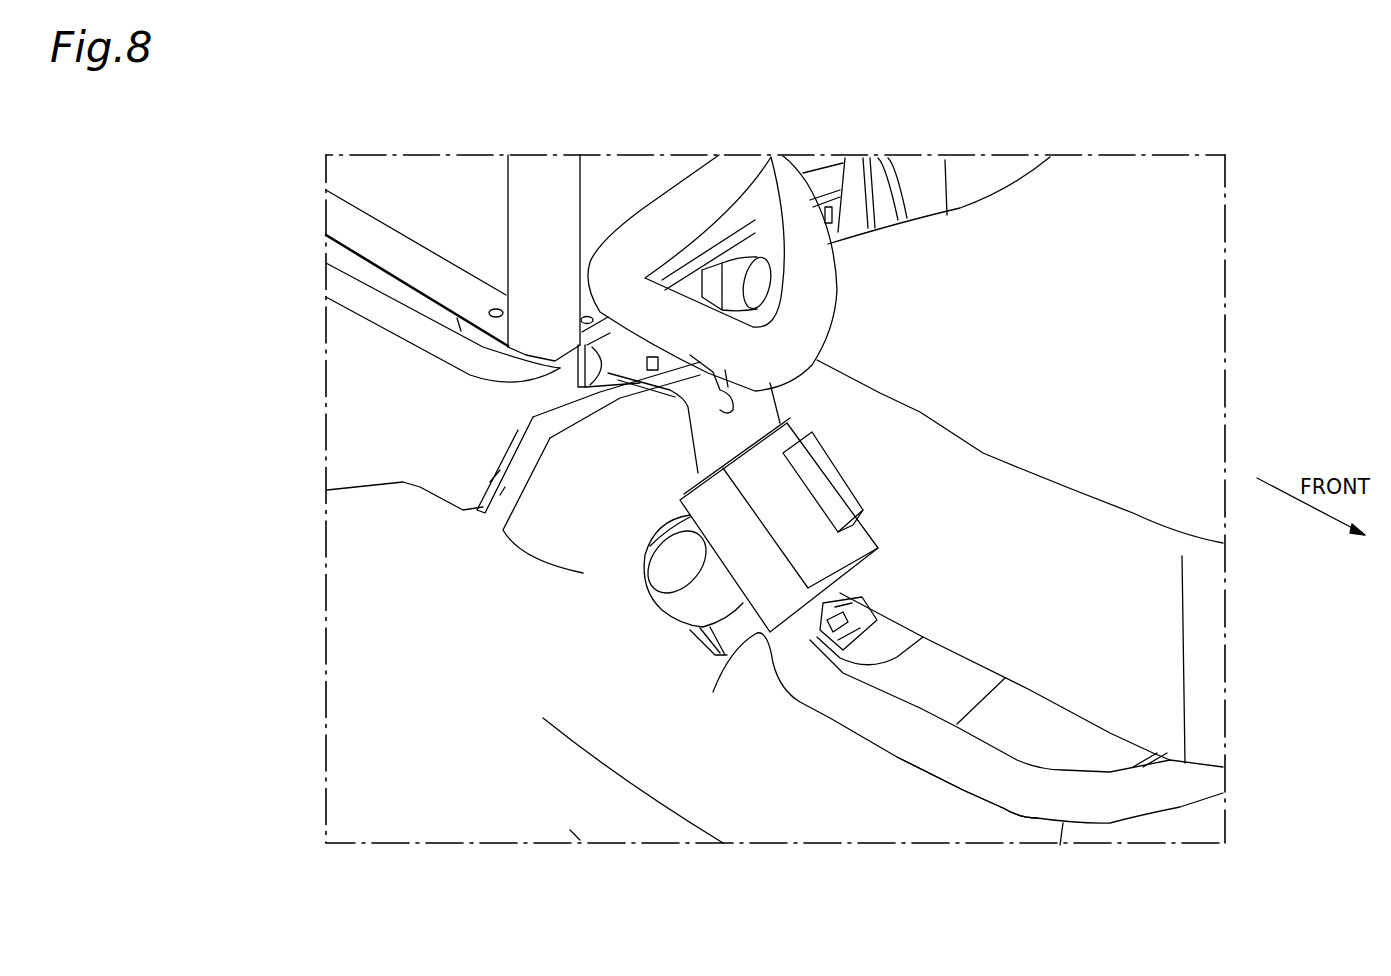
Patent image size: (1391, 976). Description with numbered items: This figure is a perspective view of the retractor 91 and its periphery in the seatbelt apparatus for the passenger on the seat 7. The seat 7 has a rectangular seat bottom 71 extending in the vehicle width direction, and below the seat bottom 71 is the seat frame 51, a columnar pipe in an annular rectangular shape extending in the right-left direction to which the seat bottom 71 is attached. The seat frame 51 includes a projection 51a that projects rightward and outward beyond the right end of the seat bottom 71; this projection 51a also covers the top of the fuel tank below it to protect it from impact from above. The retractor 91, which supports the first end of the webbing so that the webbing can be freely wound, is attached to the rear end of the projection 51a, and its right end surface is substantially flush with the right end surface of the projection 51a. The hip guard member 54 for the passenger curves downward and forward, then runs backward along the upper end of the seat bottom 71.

The seat 7 is at (1173, 156).
The hip guard member 54 is at (778, 200).
The seat bottom 71 is at (1031, 290).
The retractor 91 is at (795, 522).
The seat frame 51 is at (1192, 791).
The projection 51a is at (1002, 782).